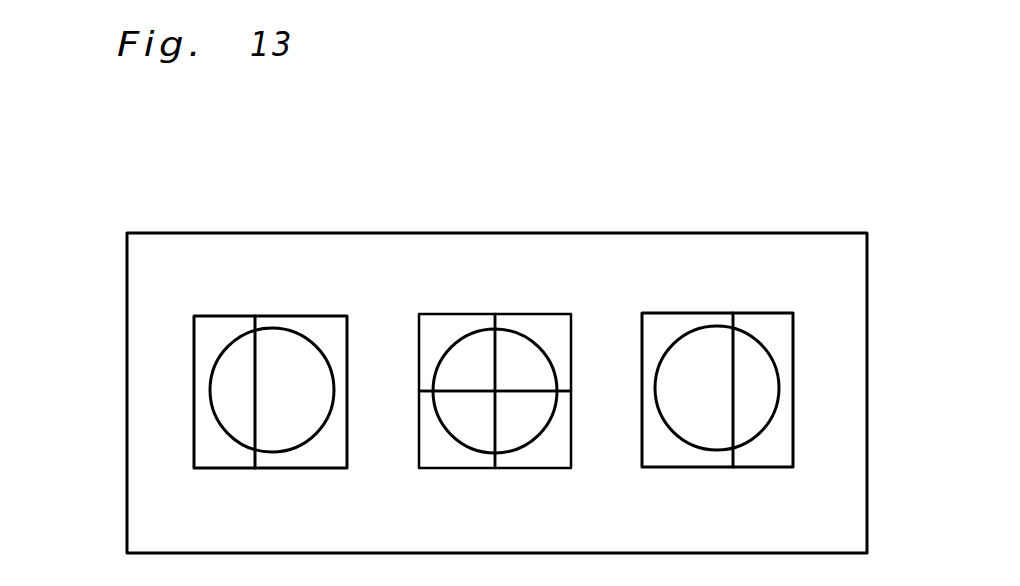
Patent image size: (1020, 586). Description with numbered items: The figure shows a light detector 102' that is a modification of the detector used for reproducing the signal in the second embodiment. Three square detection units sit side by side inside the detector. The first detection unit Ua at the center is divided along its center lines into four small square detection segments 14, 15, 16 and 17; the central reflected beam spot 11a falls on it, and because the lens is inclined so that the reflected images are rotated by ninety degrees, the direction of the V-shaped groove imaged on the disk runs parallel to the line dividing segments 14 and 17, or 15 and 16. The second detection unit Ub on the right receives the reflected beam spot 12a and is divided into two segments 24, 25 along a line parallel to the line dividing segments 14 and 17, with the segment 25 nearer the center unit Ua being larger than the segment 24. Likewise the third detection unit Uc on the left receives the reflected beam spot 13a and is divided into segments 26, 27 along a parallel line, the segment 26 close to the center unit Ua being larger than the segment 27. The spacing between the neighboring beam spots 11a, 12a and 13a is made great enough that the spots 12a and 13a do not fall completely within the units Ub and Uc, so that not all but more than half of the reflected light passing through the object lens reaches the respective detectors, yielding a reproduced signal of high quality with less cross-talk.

The light detector 102' is at (497, 347).
The third detection unit Uc is at (266, 331).
The first detection unit Ua is at (489, 331).
The second detection unit Ub is at (742, 331).
The segment 27 is at (212, 322).
The segment 26 is at (320, 322).
The reflected beam spot 13a is at (280, 443).
The detection segment 17 is at (442, 327).
The detection segment 14 is at (548, 319).
The detection segment 16 is at (435, 460).
The detection segment 15 is at (549, 455).
The beam spot 11a is at (482, 439).
The segment 25 is at (680, 323).
The segment 24 is at (768, 322).
The reflected beam spot 12a is at (707, 441).